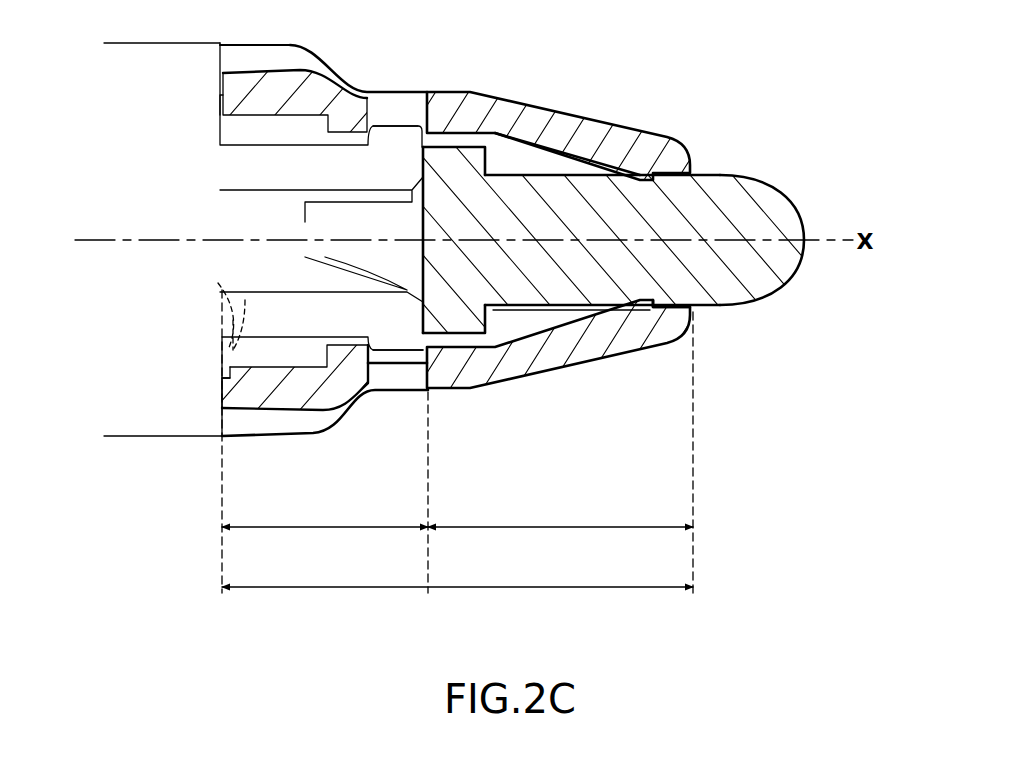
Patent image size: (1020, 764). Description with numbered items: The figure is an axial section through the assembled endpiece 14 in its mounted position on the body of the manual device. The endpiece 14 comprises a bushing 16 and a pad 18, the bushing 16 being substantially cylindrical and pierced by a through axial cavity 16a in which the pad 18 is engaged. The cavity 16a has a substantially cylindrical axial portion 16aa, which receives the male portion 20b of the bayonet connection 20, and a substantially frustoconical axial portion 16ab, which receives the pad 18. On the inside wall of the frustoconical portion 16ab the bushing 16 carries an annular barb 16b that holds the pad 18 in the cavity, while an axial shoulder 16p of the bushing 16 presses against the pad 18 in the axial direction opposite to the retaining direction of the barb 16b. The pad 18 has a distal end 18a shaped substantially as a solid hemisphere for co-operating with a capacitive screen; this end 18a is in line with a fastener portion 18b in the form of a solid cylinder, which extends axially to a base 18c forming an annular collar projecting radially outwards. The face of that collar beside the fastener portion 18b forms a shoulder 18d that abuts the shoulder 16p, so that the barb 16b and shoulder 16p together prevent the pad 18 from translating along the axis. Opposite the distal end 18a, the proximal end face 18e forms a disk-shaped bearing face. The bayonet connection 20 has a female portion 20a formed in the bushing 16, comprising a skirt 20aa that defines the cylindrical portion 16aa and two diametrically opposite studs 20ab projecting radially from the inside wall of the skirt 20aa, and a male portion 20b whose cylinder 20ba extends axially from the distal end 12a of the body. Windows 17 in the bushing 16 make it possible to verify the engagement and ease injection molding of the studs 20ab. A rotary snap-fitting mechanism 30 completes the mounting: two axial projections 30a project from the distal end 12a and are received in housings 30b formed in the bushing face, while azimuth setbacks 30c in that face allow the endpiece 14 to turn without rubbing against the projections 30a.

The distal end of the body 12a is at (219, 428).
The endpiece 14 is at (744, 104).
The bushing 16 is at (493, 328).
The through axial cavity 16a is at (457, 573).
The substantially cylindrical axial portion 16aa is at (325, 513).
The substantially frustoconical axial portion 16ab is at (560, 513).
The annular barb 16b is at (675, 296).
The axial shoulder 16p is at (493, 157).
The windows 17 is at (393, 380).
The pad 18 is at (568, 230).
The distal end 18a is at (798, 204).
The fastener portion 18b is at (603, 203).
The base 18c is at (463, 132).
The shoulder 18d is at (488, 320).
The proximal end face 18e is at (420, 224).
The bayonet connection 20 is at (275, 234).
The female portion 20a is at (263, 357).
The skirt 20aa is at (262, 97).
The studs 20ab is at (347, 357).
The male portion 20b is at (251, 339).
The cylinder 20ba is at (257, 168).
The rotary snap-fitting mechanism 30 is at (193, 251).
The axial projections 30a is at (218, 300).
The housings 30b is at (245, 300).
The azimuth setbacks 30c is at (222, 377).